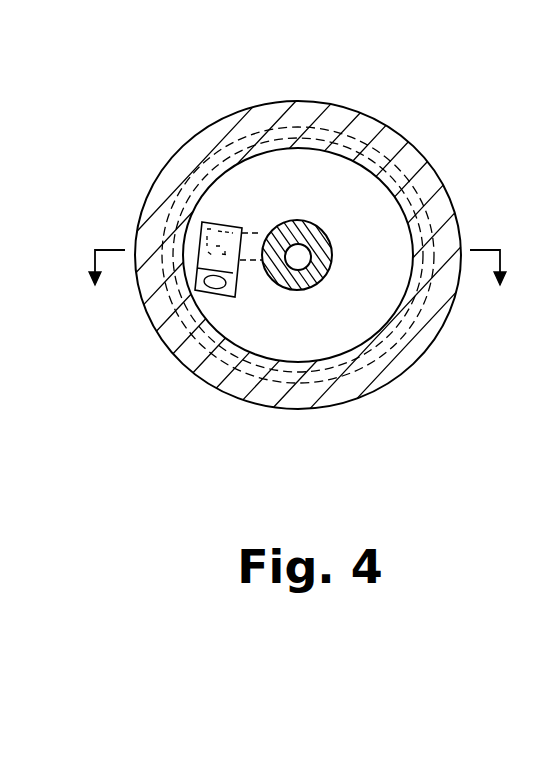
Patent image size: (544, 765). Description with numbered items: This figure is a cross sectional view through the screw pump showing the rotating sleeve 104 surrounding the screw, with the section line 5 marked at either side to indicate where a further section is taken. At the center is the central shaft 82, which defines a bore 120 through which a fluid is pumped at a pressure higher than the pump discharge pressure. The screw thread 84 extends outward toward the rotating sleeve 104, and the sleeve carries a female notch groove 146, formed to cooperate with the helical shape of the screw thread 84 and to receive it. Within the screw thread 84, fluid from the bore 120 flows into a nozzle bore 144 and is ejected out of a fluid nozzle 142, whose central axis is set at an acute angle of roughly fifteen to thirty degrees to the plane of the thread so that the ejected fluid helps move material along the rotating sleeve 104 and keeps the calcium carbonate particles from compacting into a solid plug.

The rotating sleeve 104 is at (310, 101).
The screw thread 84 is at (277, 333).
The female notch groove 146 is at (244, 131).
The nozzle bore 144 is at (210, 218).
The fluid nozzle 142 is at (197, 298).
The central shaft 82 is at (316, 226).
The bore 120 is at (300, 259).
The section line 5- 5 is at (300, 278).